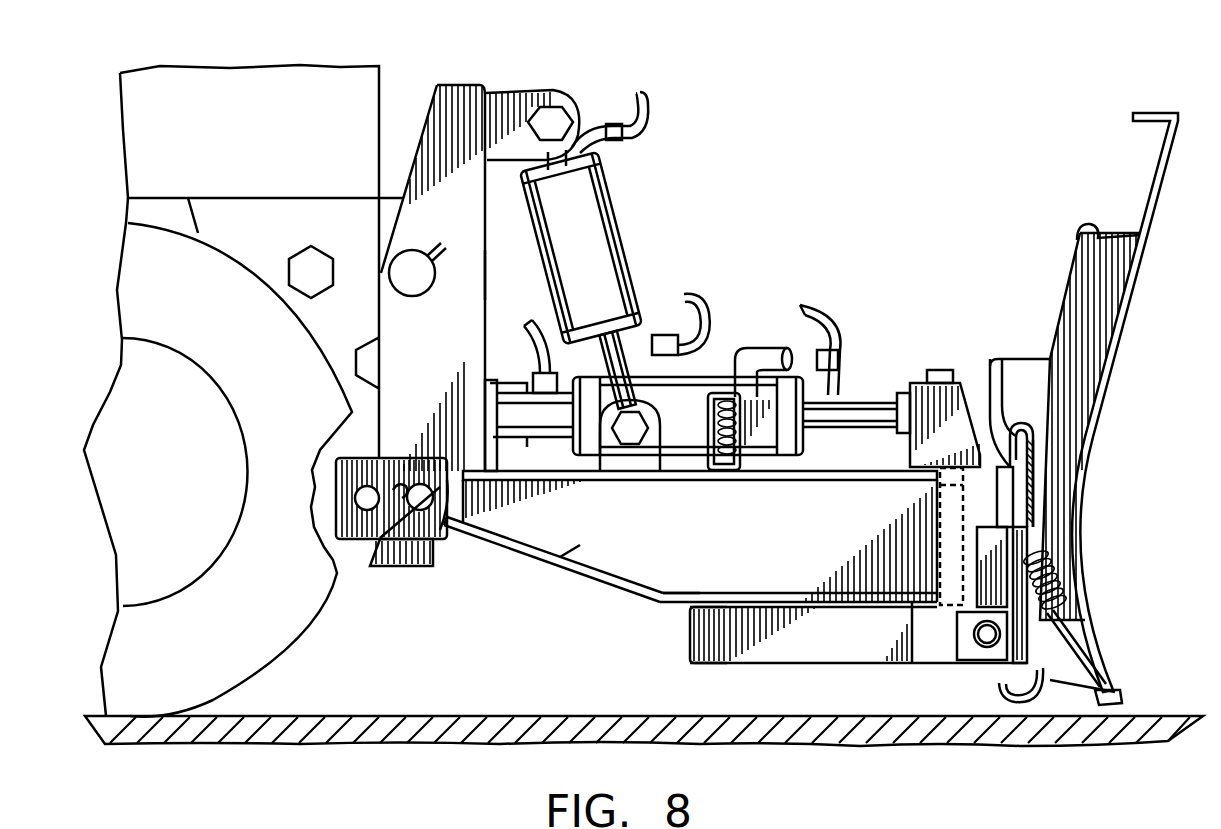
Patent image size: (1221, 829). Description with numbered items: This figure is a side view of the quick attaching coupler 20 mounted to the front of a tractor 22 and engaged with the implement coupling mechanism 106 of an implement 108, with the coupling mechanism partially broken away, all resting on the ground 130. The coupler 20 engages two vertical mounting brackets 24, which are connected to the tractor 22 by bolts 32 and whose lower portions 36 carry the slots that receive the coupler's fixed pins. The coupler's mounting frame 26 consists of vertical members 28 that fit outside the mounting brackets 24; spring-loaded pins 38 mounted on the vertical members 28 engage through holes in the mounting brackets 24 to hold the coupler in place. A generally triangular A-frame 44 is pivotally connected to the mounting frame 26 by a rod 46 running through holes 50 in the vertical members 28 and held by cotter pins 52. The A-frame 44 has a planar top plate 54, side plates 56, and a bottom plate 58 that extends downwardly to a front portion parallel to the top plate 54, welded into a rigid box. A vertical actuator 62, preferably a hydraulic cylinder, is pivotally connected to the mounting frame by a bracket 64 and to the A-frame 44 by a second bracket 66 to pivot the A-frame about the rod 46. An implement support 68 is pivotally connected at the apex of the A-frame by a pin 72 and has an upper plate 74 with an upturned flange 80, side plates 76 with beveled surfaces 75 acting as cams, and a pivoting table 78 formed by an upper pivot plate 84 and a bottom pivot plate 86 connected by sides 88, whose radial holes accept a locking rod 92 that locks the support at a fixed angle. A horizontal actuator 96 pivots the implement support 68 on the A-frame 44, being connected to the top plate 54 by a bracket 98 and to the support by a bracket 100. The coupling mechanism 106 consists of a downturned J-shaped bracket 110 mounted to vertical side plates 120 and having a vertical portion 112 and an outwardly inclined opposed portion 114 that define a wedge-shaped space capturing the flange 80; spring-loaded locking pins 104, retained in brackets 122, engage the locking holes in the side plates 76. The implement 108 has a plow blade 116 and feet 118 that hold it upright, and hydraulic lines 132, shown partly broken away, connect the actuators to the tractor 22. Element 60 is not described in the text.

The quick attaching coupler 20 is at (792, 282).
The tractor 22 is at (104, 380).
The mounting brackets 24 is at (275, 198).
The mounting frame 26 is at (427, 112).
The vertical members 28 is at (487, 247).
The bolts 32 is at (300, 252).
The lower portions 36 is at (392, 567).
The spring-loaded pins 38 is at (414, 298).
The A-frame 44 is at (648, 595).
The rod 46 is at (370, 540).
The holes 50 is at (450, 540).
The cotter pins 52 is at (410, 455).
The top plate 54 is at (830, 470).
The side plates 56 is at (577, 547).
The bottom plate 58 is at (493, 540).
The spacer 60 is at (877, 610).
The vertical actuator 62 is at (625, 240).
The bracket 64 is at (513, 95).
The second bracket 66 is at (660, 440).
The implement support 68 is at (935, 528).
The pin 72 is at (935, 455).
The upper plate 74 is at (988, 413).
The beveled surface 75 is at (1008, 512).
The side plates 76 is at (1037, 497).
The pivoting table 78 is at (790, 665).
The upturned flange 80 is at (1033, 467).
The upper pivot plate 84 is at (690, 600).
The bottom pivot plate 86 is at (727, 665).
The sides 88 is at (692, 637).
The locking rod 92 is at (748, 347).
The horizontal actuator 96 is at (722, 395).
The bracket 98 is at (525, 380).
The bracket 100 is at (917, 383).
The locking pins 104 is at (973, 637).
The implement coupling mechanism 106 is at (1052, 530).
The implement 108 is at (1109, 353).
The J-shaped bracket 110 is at (1020, 418).
The vertical portion 112 is at (1037, 510).
The opposed portion 114 is at (1005, 359).
The plow blade 116 is at (1128, 697).
The feet 118 is at (1048, 700).
The vertical side plates 120 is at (1030, 358).
The brackets 122 is at (980, 605).
The ground 130 is at (357, 752).
The hydraulic lines 132 is at (653, 122).